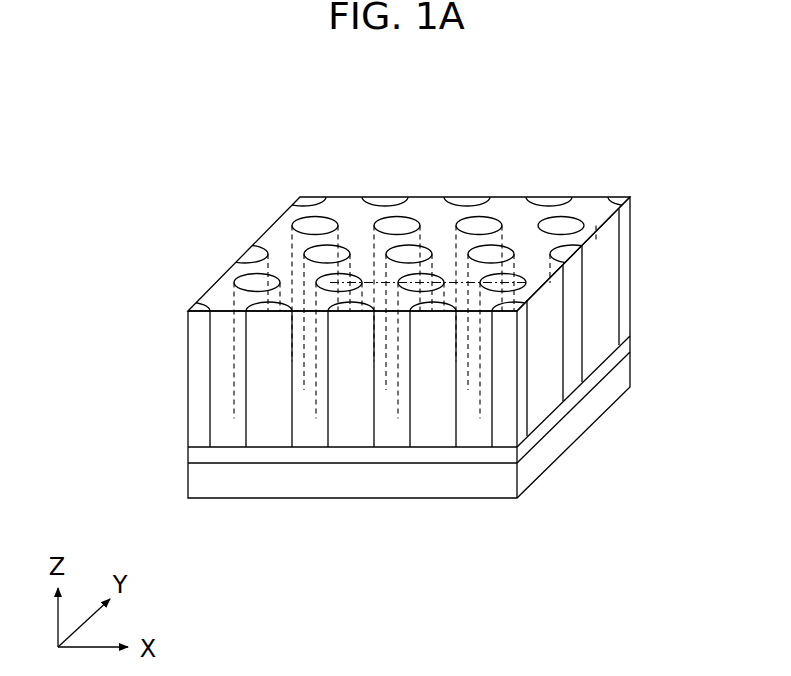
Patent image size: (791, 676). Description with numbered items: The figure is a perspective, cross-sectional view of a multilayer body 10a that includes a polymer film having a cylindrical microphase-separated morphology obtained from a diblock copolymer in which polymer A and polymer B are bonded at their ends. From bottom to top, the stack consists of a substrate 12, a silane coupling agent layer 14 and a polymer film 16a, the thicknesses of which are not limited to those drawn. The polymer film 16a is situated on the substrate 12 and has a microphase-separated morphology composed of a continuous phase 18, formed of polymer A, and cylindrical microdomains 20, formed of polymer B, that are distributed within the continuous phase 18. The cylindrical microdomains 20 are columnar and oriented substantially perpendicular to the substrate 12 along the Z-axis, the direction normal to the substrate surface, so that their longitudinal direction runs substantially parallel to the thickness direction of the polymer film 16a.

The multilayer body 10a is at (633, 136).
The substrate 12 is at (188, 491).
The silane coupling agent layer 14 is at (188, 459).
The polymer film 16a is at (183, 310).
The continuous phase 18 is at (425, 199).
The cylindrical microdomains 20 is at (325, 196).